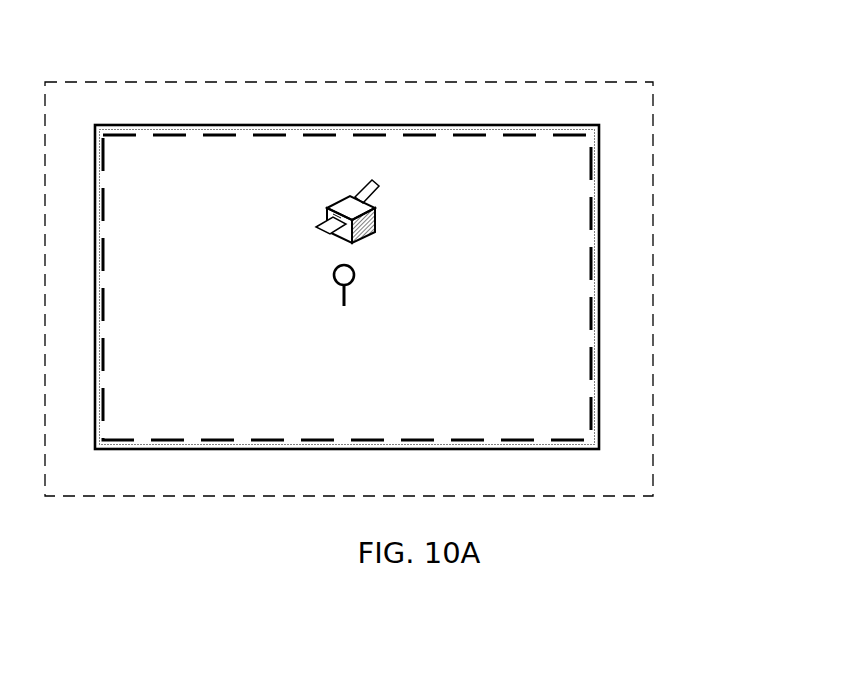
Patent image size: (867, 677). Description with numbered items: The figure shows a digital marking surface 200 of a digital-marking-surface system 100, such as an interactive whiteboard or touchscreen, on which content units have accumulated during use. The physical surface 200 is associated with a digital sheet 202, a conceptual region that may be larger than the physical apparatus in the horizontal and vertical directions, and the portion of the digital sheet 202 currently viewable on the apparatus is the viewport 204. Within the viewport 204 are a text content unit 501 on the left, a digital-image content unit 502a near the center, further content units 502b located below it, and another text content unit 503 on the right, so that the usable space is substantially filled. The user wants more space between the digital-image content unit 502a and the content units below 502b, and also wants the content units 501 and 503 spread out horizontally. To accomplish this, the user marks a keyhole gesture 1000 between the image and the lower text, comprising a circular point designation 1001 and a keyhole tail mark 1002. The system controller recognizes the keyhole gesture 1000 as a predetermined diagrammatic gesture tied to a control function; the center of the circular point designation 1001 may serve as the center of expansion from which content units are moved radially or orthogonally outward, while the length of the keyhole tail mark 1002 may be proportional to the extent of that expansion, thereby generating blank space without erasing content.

The digital-marking-surface system 100 is at (612, 150).
The digital marking surface 200 is at (539, 424).
The digital sheet 202 is at (663, 100).
The viewport 204 is at (603, 223).
The content unit 501 is at (193, 174).
The digital-image content unit 502a is at (314, 239).
The content units below 502b is at (290, 388).
The content unit 503 is at (460, 175).
The keyhole gesture 1000 is at (341, 280).
The circular point designation 1001 is at (356, 254).
The keyhole tail mark 1002 is at (360, 298).